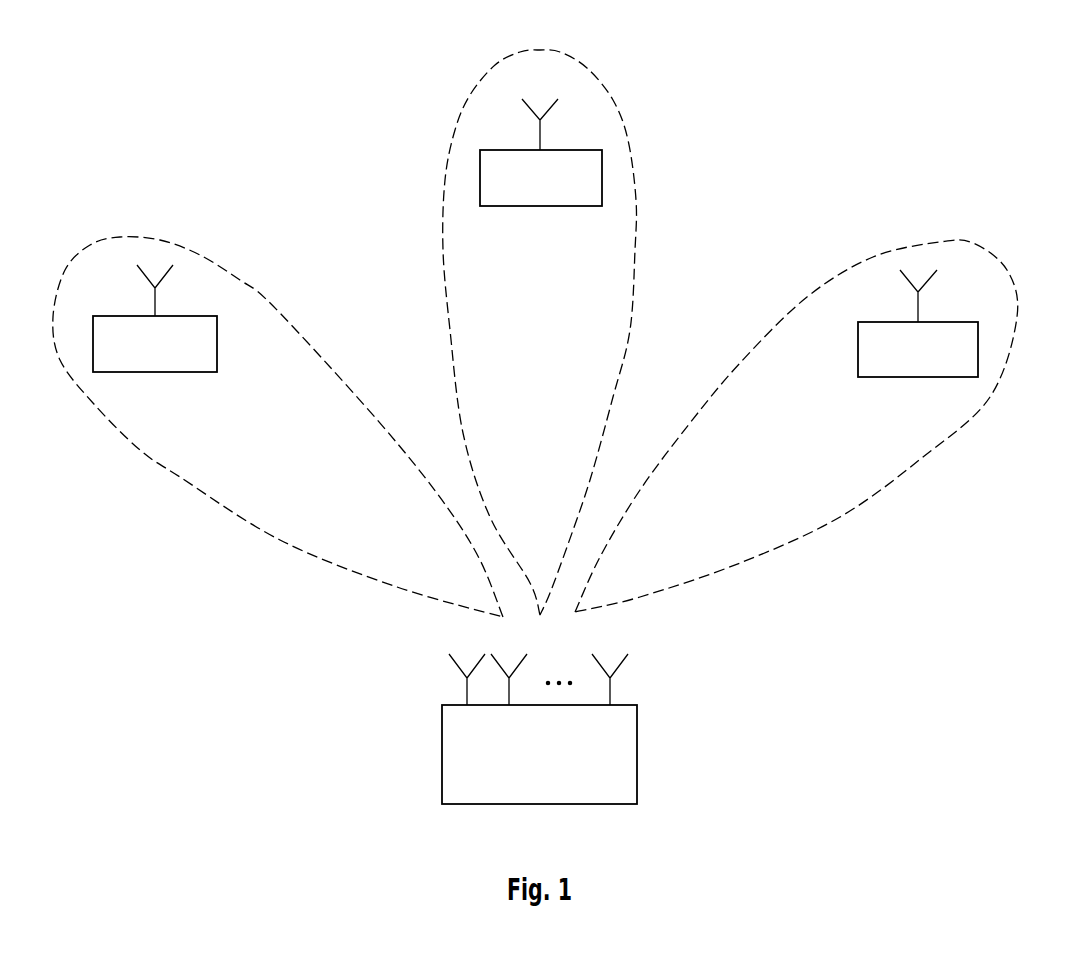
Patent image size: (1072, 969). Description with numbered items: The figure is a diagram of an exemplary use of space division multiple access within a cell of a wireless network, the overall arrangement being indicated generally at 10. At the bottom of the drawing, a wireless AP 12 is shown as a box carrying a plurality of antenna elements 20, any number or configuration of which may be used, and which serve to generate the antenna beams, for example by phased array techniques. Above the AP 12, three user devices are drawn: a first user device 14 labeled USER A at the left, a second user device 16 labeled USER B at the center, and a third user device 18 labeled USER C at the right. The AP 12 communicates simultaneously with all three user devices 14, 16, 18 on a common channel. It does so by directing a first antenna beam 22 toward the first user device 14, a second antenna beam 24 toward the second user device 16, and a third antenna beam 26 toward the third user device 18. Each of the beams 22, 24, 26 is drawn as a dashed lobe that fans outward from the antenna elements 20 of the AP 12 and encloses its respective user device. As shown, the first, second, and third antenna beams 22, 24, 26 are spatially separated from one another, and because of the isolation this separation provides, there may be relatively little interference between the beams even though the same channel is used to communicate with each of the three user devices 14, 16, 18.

The wireless communication system 10 is at (84, 100).
The wireless AP 12 is at (637, 752).
The first user device 14 is at (200, 372).
The second user device 16 is at (527, 206).
The third user device 18 is at (877, 377).
The antenna elements 20 is at (422, 648).
The first antenna beam 22 is at (240, 280).
The second antenna beam 24 is at (632, 158).
The third antenna beam 26 is at (960, 241).